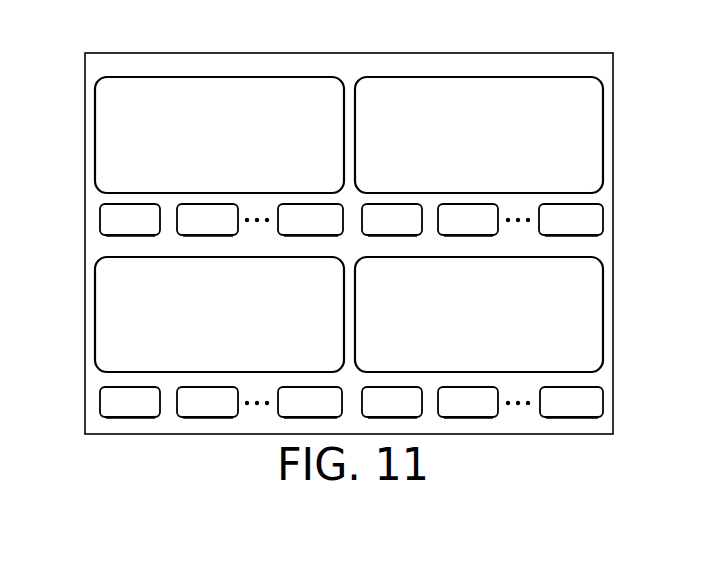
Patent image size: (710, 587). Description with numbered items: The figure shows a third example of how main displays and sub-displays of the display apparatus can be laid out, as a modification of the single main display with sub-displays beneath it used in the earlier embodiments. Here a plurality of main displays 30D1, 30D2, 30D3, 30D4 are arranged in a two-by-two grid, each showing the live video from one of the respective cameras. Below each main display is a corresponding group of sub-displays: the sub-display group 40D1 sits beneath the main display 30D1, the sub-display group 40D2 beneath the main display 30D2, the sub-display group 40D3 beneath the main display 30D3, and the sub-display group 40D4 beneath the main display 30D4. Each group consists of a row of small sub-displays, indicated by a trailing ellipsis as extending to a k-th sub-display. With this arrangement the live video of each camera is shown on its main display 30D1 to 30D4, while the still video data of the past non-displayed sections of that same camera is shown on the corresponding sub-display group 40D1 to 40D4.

The main display 30D1 is at (275, 95).
The main display 30D2 is at (536, 95).
The main display 30D3 is at (112, 313).
The main display 30D4 is at (592, 311).
The sub-display group 40D1 is at (100, 217).
The sub-display group 40D2 is at (603, 202).
The sub-display group 40D3 is at (100, 404).
The sub-display group 40D4 is at (603, 400).